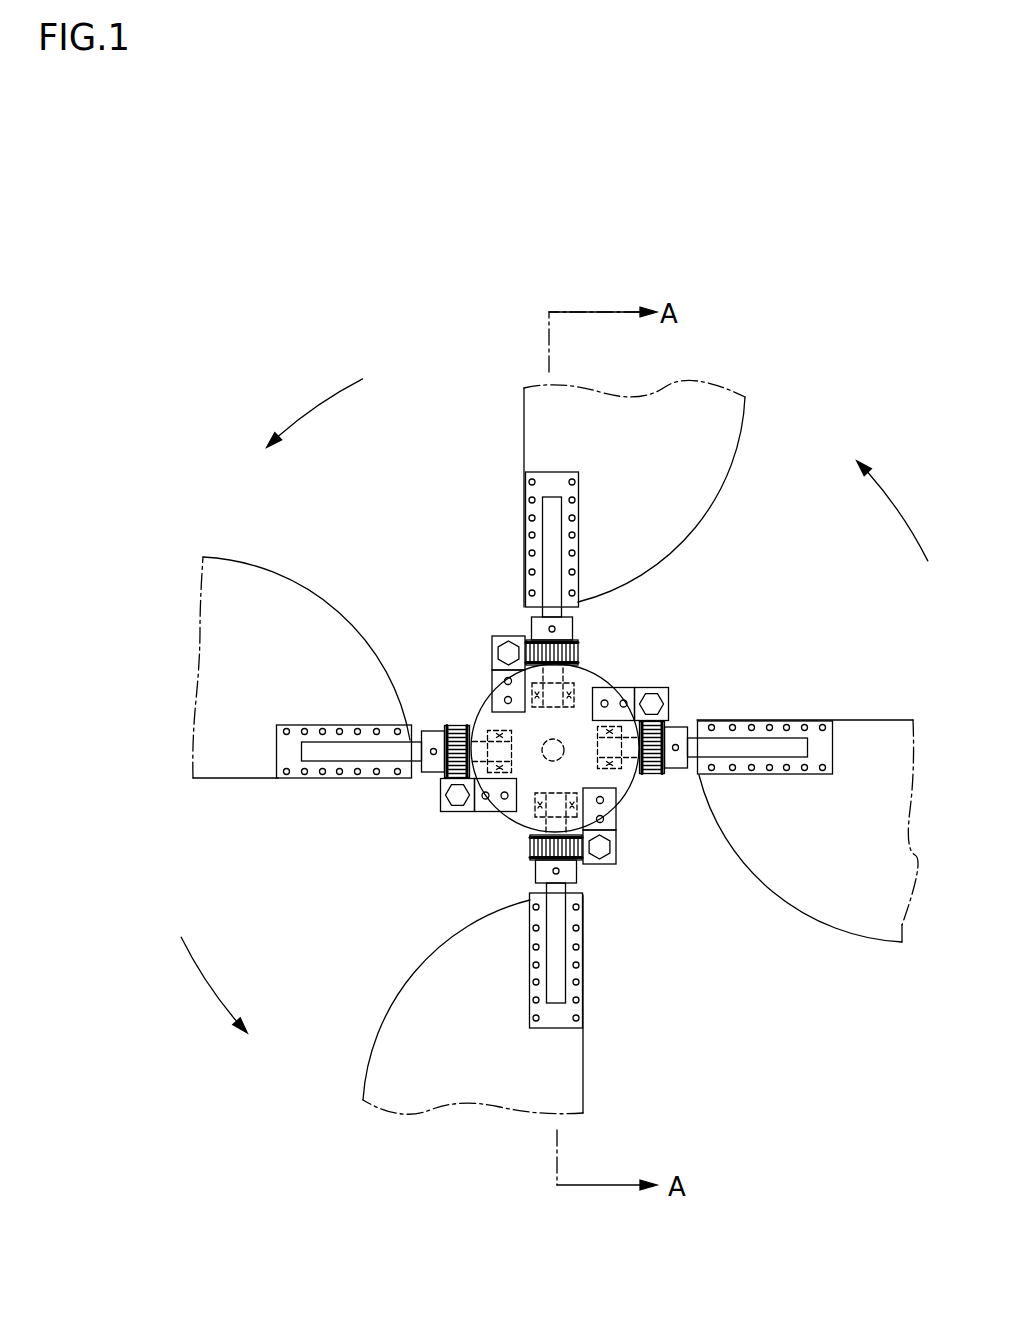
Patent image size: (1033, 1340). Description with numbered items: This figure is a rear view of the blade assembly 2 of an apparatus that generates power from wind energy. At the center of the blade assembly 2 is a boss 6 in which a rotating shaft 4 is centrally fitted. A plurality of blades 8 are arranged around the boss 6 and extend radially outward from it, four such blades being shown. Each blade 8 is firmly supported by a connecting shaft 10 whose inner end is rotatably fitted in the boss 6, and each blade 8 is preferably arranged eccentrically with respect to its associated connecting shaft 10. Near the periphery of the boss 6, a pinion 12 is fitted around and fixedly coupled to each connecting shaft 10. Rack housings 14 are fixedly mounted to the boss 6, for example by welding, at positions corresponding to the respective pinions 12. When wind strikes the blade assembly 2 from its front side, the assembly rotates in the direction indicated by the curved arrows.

The blade assembly 2 is at (472, 841).
The rotating shaft 4 is at (547, 745).
The boss 6 is at (582, 684).
The blade 8 is at (838, 913).
The connecting shaft 10 is at (792, 745).
The pinion 12 is at (662, 730).
The rack housing 14 is at (658, 690).